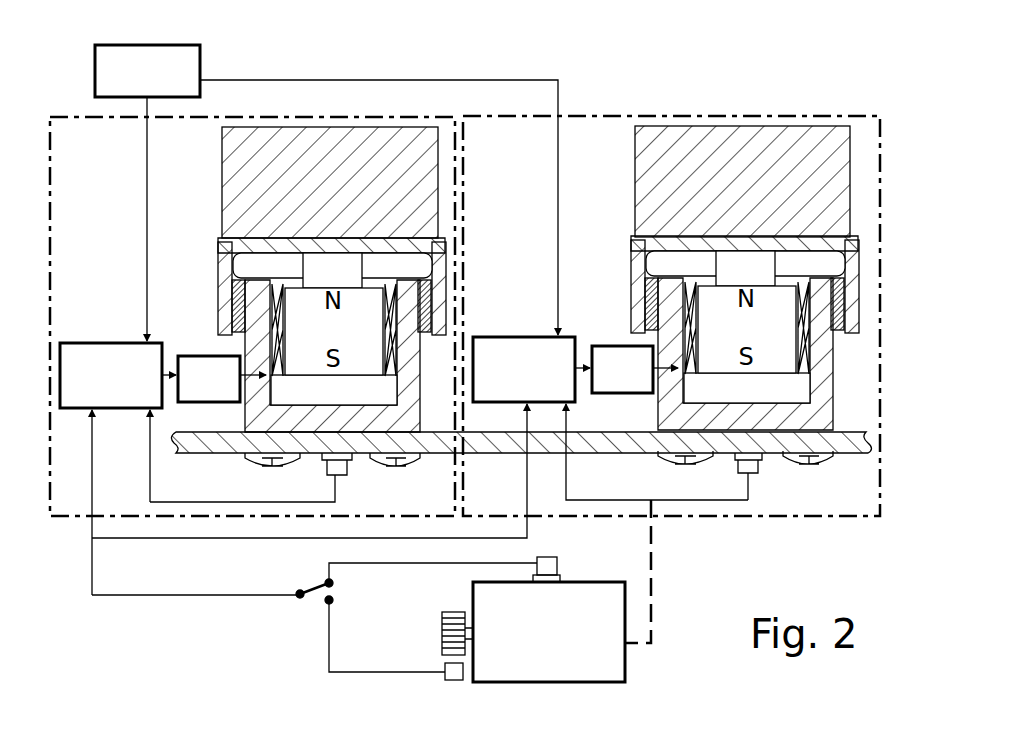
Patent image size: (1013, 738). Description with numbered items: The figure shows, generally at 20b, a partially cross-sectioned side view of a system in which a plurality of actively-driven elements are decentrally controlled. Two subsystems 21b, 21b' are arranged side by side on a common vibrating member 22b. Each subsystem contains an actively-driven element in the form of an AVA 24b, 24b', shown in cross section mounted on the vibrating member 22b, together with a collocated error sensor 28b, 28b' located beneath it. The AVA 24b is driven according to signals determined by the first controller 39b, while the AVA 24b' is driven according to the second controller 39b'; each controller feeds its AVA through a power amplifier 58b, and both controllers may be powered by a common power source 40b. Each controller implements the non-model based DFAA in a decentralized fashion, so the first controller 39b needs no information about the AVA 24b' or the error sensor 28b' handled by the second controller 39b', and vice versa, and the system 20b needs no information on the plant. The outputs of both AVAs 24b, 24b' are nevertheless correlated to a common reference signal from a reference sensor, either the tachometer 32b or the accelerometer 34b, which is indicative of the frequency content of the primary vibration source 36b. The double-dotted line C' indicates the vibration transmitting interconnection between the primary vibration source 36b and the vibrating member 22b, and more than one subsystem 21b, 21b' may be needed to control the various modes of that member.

The system 20b is at (575, 110).
The subsystem 21b is at (252, 303).
The subsystem 21b' is at (671, 291).
The vibrating member 22b is at (845, 430).
The AVA 24b is at (301, 182).
The AVA 24b' is at (753, 152).
The collocated error sensor 28b is at (372, 483).
The collocated error sensor 28b' is at (795, 483).
The tachometer 32b is at (443, 668).
The accelerometer 34b is at (560, 565).
The primary vibration source 36b is at (628, 660).
The controller 1 39b is at (108, 336).
The controller 2 39b' is at (524, 322).
The power source 40b is at (145, 45).
The power amplifier 58b is at (205, 354).
The double-dotted line C' is at (668, 571).